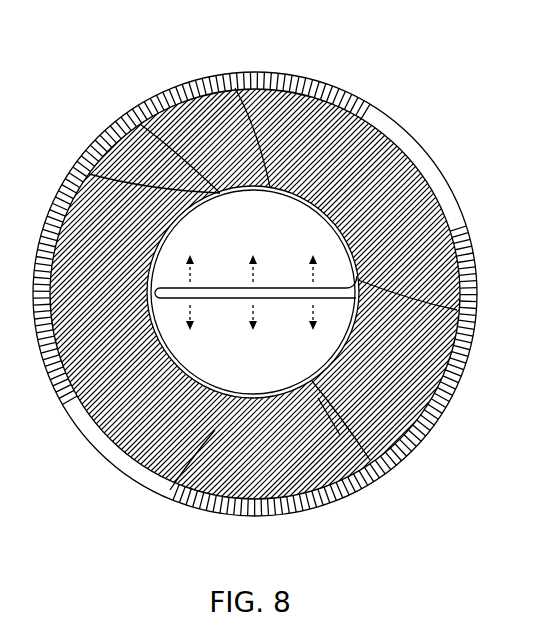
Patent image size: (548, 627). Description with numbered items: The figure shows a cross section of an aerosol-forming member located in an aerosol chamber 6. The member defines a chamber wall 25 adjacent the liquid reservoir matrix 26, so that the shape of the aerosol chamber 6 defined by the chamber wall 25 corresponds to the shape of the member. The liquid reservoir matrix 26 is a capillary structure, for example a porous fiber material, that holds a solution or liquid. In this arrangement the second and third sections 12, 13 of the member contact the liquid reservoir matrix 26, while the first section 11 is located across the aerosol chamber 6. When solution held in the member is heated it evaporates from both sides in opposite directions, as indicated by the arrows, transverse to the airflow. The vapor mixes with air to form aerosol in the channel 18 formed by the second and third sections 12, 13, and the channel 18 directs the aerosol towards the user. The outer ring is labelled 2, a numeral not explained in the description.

The tubular body 2 is at (352, 95).
The aerosol chamber 6 is at (130, 110).
The first section 11 is at (273, 298).
The second section 12 is at (390, 467).
The third section 13 is at (240, 232).
The channel 18 is at (203, 248).
The chamber wall 25 is at (427, 152).
The liquid reservoir matrix 26 is at (473, 313).